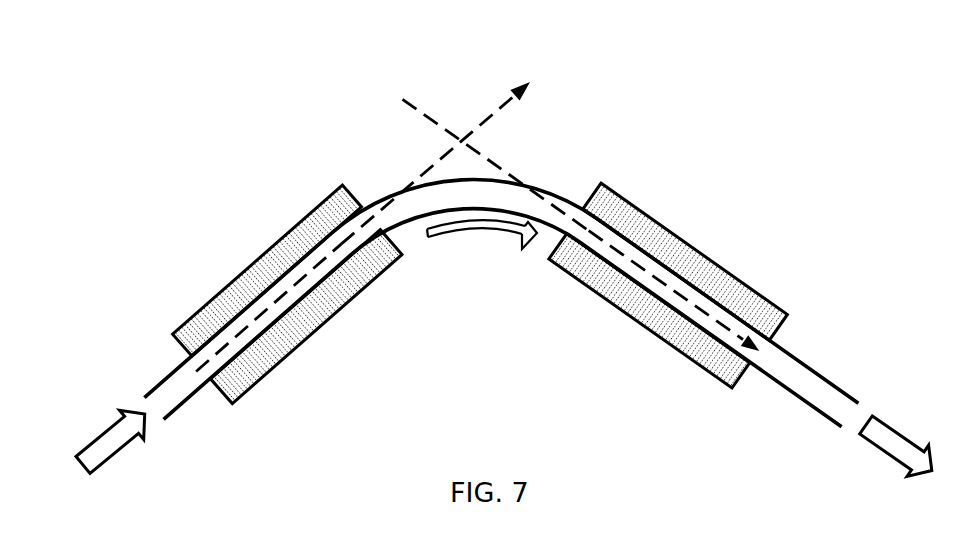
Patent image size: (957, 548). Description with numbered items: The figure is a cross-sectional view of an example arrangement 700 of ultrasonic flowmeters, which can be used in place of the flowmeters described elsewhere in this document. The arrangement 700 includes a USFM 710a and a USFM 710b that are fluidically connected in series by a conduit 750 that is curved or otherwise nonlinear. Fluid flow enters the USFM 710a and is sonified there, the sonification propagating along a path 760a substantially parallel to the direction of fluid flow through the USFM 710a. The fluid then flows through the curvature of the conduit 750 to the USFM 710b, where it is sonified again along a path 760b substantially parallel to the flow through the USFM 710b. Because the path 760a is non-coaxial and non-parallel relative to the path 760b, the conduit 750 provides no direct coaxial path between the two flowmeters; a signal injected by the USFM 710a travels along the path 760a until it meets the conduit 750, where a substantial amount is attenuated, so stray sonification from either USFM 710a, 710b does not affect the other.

The arrangement 700 is at (136, 72).
The USFM 710a is at (245, 270).
The USFM 710b is at (650, 216).
The conduit 750 is at (557, 193).
The path 760a is at (477, 127).
The path 760b is at (425, 118).